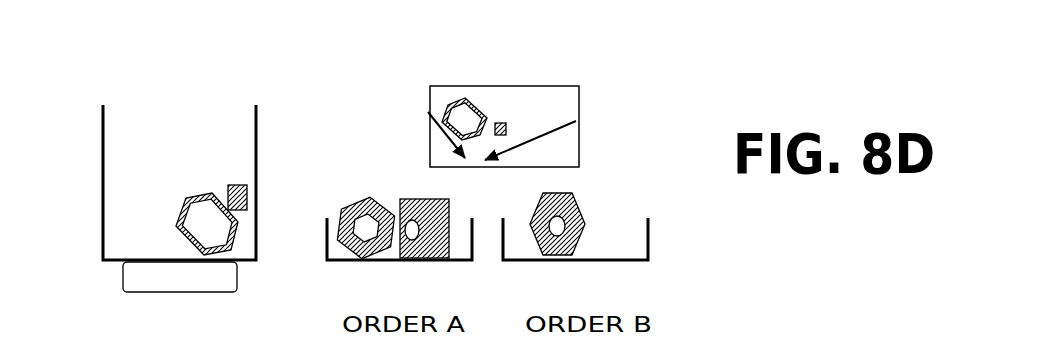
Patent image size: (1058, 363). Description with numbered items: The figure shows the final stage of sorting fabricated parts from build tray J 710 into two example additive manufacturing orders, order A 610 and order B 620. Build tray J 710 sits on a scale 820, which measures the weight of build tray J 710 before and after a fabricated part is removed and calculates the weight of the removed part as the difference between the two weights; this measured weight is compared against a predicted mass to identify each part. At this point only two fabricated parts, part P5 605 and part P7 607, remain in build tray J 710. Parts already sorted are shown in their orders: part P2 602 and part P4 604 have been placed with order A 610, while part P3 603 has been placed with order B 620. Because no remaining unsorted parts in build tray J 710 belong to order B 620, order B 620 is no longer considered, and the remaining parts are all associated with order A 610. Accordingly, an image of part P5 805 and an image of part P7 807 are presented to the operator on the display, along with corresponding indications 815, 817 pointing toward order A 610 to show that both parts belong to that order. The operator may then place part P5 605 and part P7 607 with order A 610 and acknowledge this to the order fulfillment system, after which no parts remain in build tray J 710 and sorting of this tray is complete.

The part P2 602 is at (425, 199).
The part P3 603 is at (578, 204).
The part P4 604 is at (364, 197).
The part P5 605 is at (192, 197).
The part P7 607 is at (238, 185).
The order A 610 is at (413, 262).
The order B 620 is at (600, 262).
The build tray J 710 is at (115, 263).
The image of part P5 805 is at (453, 102).
The image of part P7 807 is at (502, 122).
The indication 815 is at (428, 112).
The indication 817 is at (576, 121).
The scale 820 is at (150, 293).